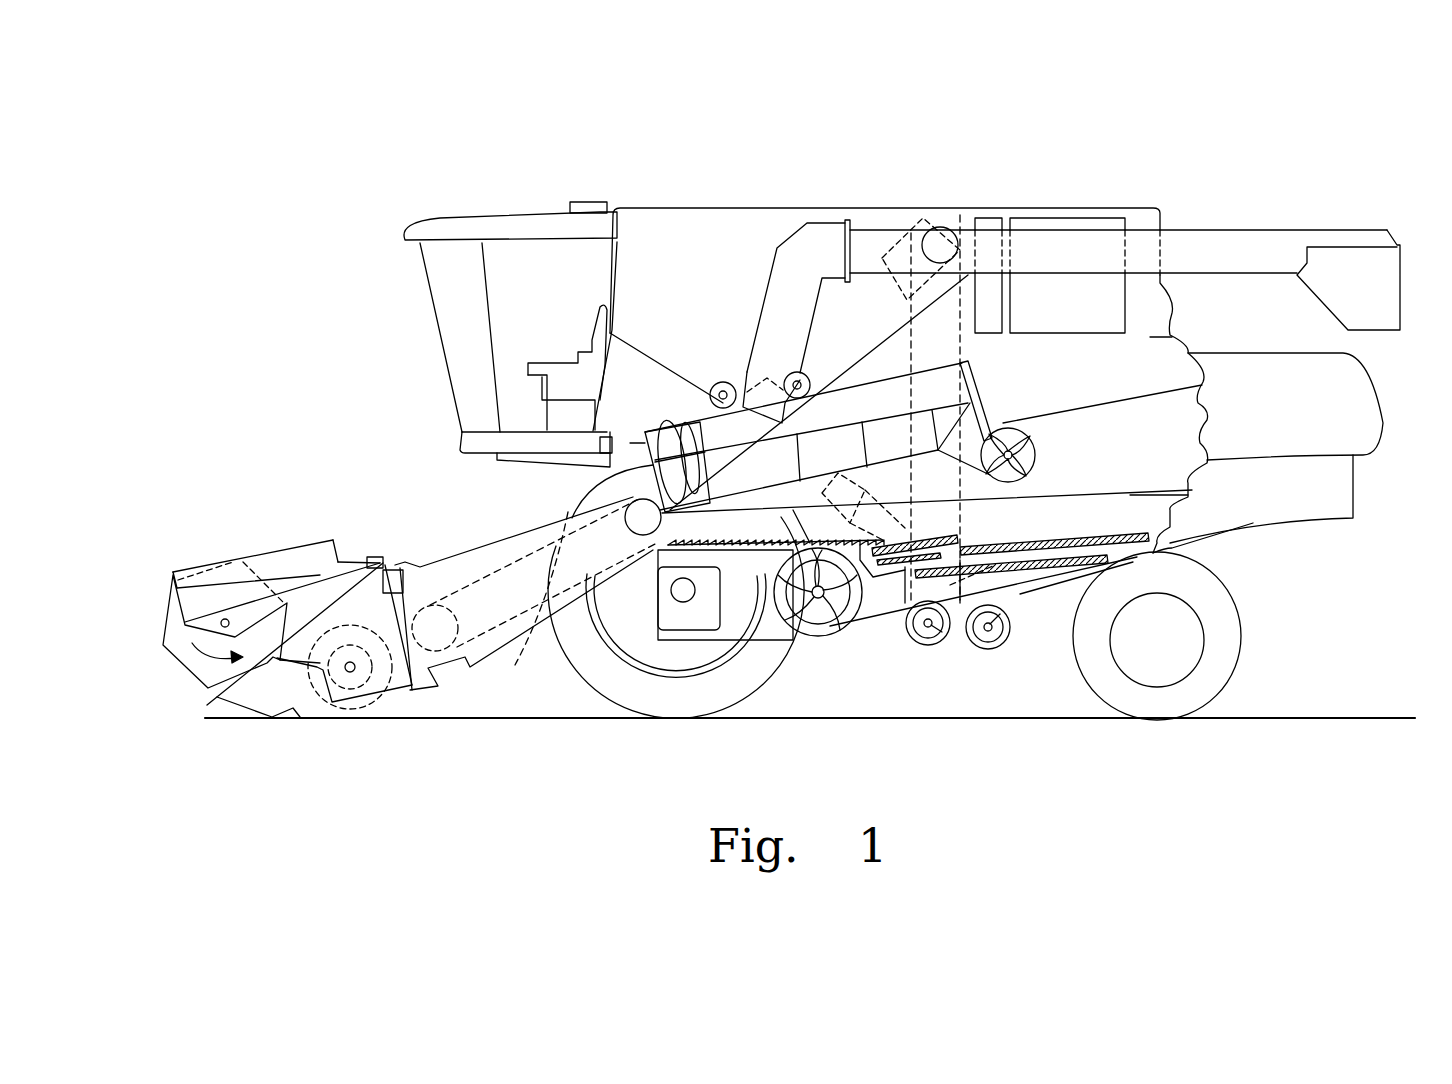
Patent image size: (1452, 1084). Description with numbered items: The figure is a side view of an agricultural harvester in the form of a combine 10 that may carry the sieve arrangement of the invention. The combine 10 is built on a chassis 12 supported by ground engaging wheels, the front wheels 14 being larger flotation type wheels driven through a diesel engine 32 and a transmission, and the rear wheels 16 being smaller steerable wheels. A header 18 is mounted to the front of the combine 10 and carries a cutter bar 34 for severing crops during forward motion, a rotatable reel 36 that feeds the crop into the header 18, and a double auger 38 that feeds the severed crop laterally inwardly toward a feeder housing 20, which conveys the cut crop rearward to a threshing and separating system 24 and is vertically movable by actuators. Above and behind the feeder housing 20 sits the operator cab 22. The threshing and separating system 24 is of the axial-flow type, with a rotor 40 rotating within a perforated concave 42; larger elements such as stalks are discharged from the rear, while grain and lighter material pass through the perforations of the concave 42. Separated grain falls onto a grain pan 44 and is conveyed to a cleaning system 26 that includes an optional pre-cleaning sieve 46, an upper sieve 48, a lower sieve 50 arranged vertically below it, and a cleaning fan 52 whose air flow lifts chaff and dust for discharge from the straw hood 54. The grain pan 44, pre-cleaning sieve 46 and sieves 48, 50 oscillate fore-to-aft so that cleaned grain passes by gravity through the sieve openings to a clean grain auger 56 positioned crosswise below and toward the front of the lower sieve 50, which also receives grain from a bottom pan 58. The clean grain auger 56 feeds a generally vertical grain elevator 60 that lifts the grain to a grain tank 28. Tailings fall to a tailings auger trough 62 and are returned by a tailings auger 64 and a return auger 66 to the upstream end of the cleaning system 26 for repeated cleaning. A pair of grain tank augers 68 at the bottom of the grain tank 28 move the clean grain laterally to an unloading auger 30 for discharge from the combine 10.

The combine 10 is at (498, 188).
The chassis 12 is at (1172, 548).
The front wheels 14 is at (583, 672).
The rear wheels 16 is at (1232, 657).
The header 18 is at (256, 532).
The feeder housing 20 is at (478, 530).
The operator cab 22 is at (437, 315).
The threshing and separating system 24 is at (577, 481).
The cleaning system 26 is at (882, 657).
The grain tank 28 is at (678, 214).
The unloading auger 30 is at (1255, 240).
The diesel engine 32 is at (1057, 222).
The cutter bar 34 is at (272, 714).
The reel 36 is at (172, 613).
The double auger 38 is at (352, 678).
The rotor 40 is at (668, 432).
The concave 42 is at (855, 413).
The grain pan 44 is at (650, 565).
The pre-cleaning sieve 46 is at (972, 533).
The upper sieve 48 is at (1075, 537).
The lower sieve 50 is at (1040, 567).
The cleaning fan 52 is at (818, 640).
The straw hood 54 is at (1368, 397).
The clean grain auger 56 is at (933, 637).
The bottom pan 58 is at (1090, 574).
The grain elevator 60 is at (958, 345).
The tailings auger trough 62 is at (1067, 580).
The tailings auger 64 is at (985, 650).
The return auger 66 is at (893, 520).
The grain tank augers 68 is at (722, 382).